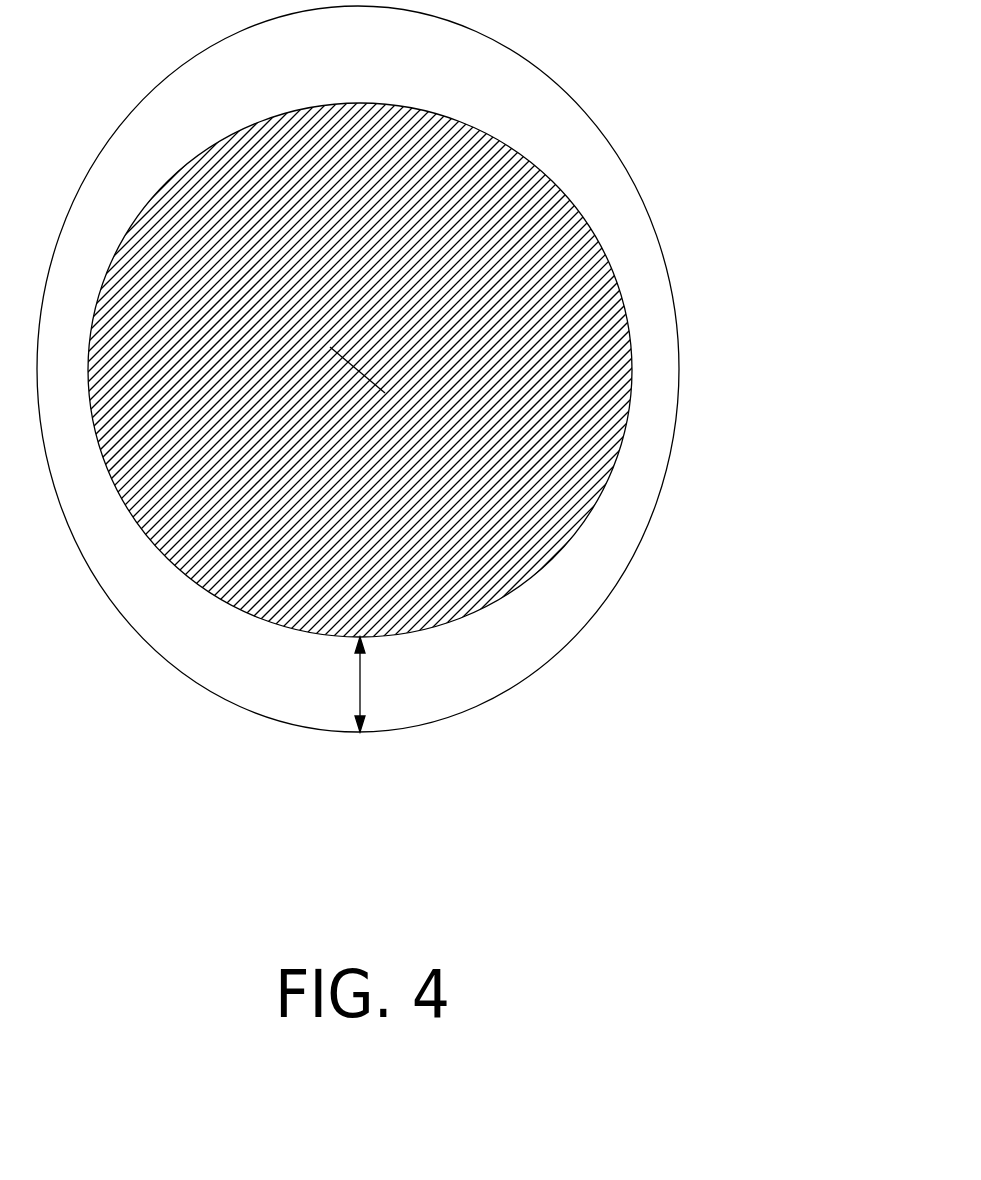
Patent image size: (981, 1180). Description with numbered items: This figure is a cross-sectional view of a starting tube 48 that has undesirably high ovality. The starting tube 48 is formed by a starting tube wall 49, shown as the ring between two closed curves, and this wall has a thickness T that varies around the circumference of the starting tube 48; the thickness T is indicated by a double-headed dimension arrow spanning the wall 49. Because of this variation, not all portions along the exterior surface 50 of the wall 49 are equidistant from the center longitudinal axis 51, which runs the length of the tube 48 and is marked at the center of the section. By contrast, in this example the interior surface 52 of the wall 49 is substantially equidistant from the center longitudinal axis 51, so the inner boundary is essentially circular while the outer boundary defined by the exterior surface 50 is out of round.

The starting tube 48 is at (490, 428).
The starting tube wall 49 is at (509, 650).
The exterior surface 50 is at (681, 303).
The center longitudinal axis 51 is at (359, 362).
The interior surface 52 is at (580, 263).
The thickness T is at (358, 682).